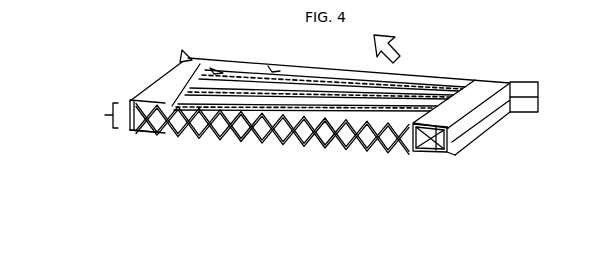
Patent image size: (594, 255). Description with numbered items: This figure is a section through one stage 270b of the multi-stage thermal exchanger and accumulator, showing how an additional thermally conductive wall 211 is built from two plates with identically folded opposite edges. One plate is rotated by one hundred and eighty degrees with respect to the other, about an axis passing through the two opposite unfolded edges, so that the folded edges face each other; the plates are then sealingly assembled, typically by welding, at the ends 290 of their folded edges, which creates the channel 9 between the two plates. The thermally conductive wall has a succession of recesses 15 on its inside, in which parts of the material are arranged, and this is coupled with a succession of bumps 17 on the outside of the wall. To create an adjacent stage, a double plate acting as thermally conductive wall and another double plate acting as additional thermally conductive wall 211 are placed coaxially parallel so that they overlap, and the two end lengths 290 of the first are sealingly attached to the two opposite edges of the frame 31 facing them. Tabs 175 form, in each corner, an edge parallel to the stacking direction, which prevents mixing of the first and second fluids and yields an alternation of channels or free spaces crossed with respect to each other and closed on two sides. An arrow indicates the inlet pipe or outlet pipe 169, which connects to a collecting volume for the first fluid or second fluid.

The channel 9 is at (158, 124).
The recesses 15 is at (263, 130).
The bumps 17 is at (266, 72).
The frame 31 is at (482, 92).
The inlet pipe or outlet pipe 169 is at (398, 60).
The tabs 175 is at (191, 57).
The additional thermally conductive wall 211 is at (228, 121).
The stage 270b is at (90, 115).
The ends of folded edges 290 is at (130, 101).